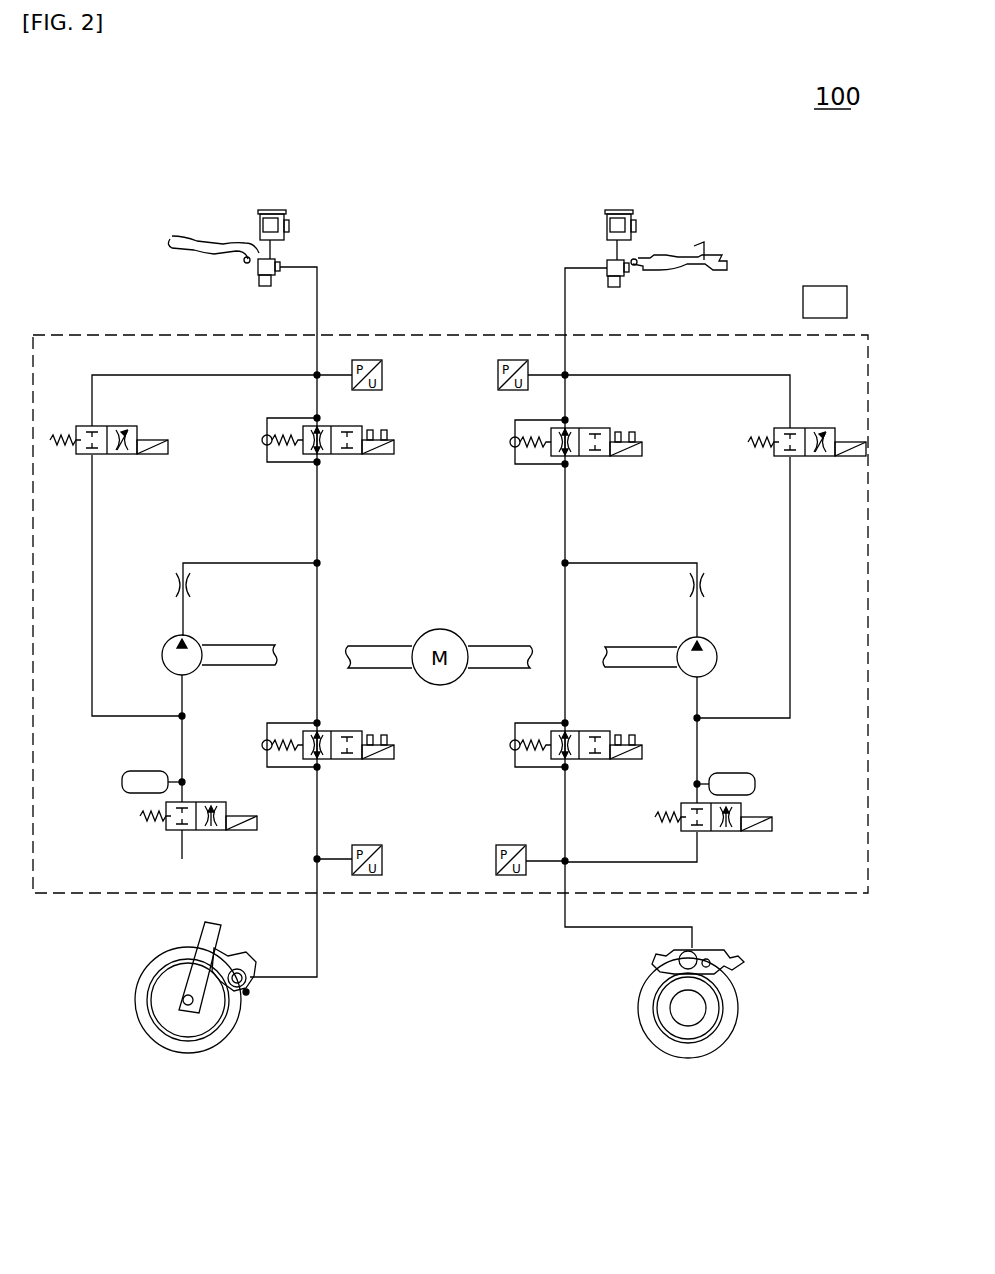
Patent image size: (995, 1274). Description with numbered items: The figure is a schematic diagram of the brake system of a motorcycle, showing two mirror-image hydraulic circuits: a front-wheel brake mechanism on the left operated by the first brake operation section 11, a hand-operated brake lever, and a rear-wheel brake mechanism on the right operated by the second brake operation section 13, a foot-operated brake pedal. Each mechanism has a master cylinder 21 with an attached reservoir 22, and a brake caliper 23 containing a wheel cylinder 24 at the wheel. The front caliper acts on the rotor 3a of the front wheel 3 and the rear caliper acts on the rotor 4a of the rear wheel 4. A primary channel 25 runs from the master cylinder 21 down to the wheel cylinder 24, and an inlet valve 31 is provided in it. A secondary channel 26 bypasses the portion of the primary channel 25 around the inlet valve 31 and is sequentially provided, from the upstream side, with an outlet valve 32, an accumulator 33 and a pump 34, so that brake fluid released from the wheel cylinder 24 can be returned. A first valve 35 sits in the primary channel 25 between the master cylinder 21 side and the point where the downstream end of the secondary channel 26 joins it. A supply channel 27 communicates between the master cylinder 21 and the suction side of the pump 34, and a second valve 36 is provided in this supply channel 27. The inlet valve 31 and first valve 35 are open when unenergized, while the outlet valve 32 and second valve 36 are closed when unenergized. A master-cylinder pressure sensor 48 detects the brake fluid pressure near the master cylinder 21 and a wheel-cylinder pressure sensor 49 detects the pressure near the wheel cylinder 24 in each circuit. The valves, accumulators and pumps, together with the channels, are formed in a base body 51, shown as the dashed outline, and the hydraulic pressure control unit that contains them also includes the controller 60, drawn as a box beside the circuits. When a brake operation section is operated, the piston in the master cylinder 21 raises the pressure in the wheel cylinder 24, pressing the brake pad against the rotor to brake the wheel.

The first brake operation section 11 is at (192, 240).
The second brake operation section 13 is at (712, 245).
The master cylinder 21 is at (272, 286).
The reservoir 22 is at (270, 210).
The brake caliper 23 is at (240, 962).
The wheel cylinder 24 is at (255, 985).
The primary channel 25 is at (317, 496).
The secondary channel 26 is at (248, 562).
The supply channel 27 is at (222, 376).
The inlet valve 31 is at (357, 760).
The outlet valve 32 is at (213, 802).
The accumulator 33 is at (145, 772).
The pump 34 is at (162, 652).
The first valve 35 is at (368, 458).
The second valve 36 is at (150, 457).
The master-cylinder pressure sensor 48 is at (383, 377).
The wheel-cylinder pressure sensor 49 is at (382, 863).
The base body 51 is at (55, 333).
The controller 60 is at (822, 284).
The front wheel 3 is at (215, 1026).
The rotor 3a is at (228, 1027).
The rear wheel 4 is at (663, 1044).
The rotor 4a is at (650, 1030).